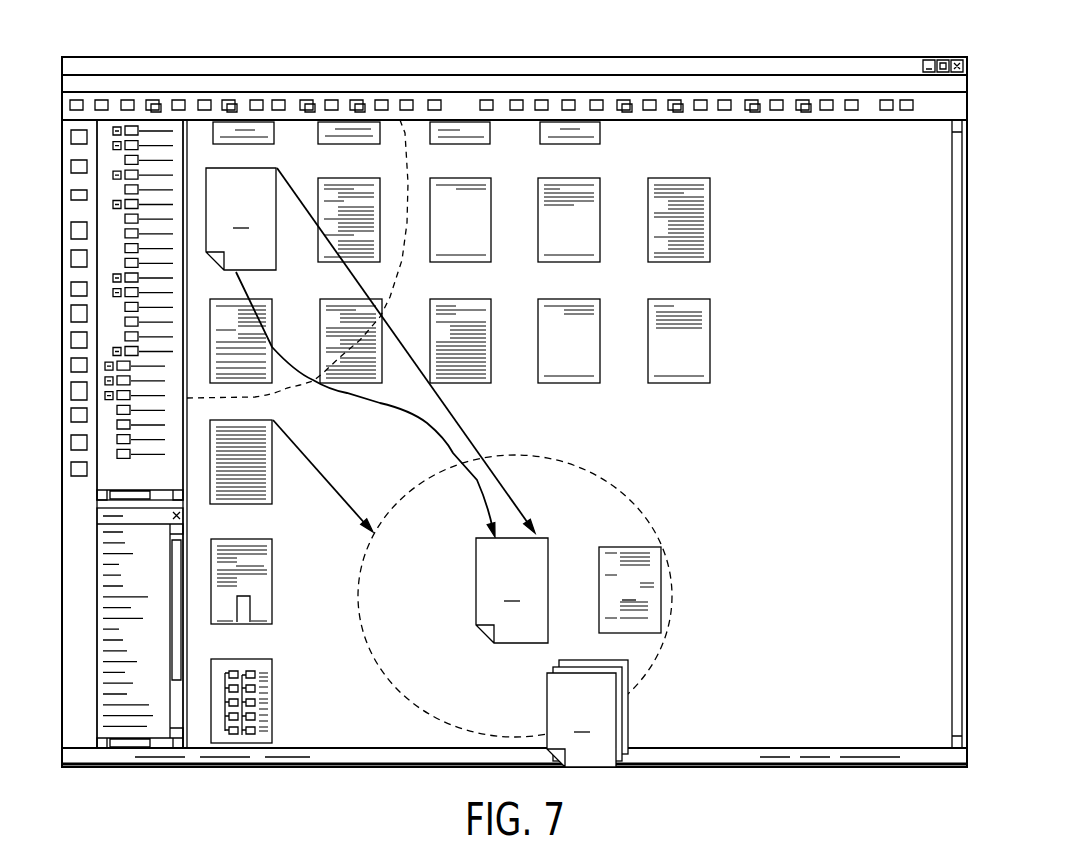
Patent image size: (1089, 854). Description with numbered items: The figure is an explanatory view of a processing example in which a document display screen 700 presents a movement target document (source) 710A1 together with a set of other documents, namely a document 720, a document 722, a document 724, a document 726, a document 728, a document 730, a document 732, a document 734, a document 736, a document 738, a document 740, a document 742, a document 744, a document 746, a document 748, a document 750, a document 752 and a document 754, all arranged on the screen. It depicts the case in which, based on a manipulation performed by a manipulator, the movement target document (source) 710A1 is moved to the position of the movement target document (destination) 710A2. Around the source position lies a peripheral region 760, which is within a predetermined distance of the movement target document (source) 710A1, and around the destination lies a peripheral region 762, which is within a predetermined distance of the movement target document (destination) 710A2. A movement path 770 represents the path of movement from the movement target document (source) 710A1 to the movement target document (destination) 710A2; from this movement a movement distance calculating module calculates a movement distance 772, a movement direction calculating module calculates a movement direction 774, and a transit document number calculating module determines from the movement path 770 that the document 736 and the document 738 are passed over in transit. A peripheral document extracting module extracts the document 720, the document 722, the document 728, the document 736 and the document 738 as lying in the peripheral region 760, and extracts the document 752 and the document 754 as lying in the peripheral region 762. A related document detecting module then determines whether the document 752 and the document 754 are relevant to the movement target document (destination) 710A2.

The document display screen 700 is at (1026, 74).
The movement target document (source) 710A1 is at (247, 270).
The movement target document (destination) 710A2 is at (476, 597).
The document 720 is at (245, 144).
The document 722 is at (340, 144).
The document 724 is at (475, 144).
The document 726 is at (585, 144).
The document 728 is at (365, 262).
The document 730 is at (470, 262).
The document 732 is at (578, 262).
The document 734 is at (688, 262).
The document 736 is at (233, 383).
The document 738 is at (380, 385).
The document 740 is at (470, 383).
The document 742 is at (578, 383).
The document 744 is at (688, 383).
The document 746 is at (250, 504).
The document 748 is at (250, 624).
The document 750 is at (272, 702).
The document 752 is at (661, 577).
The document 754 is at (547, 697).
The peripheral region 760 is at (300, 385).
The peripheral region 762 is at (637, 507).
The movement path 770 is at (422, 428).
The movement distance 772 is at (472, 443).
The movement direction 774 is at (330, 480).